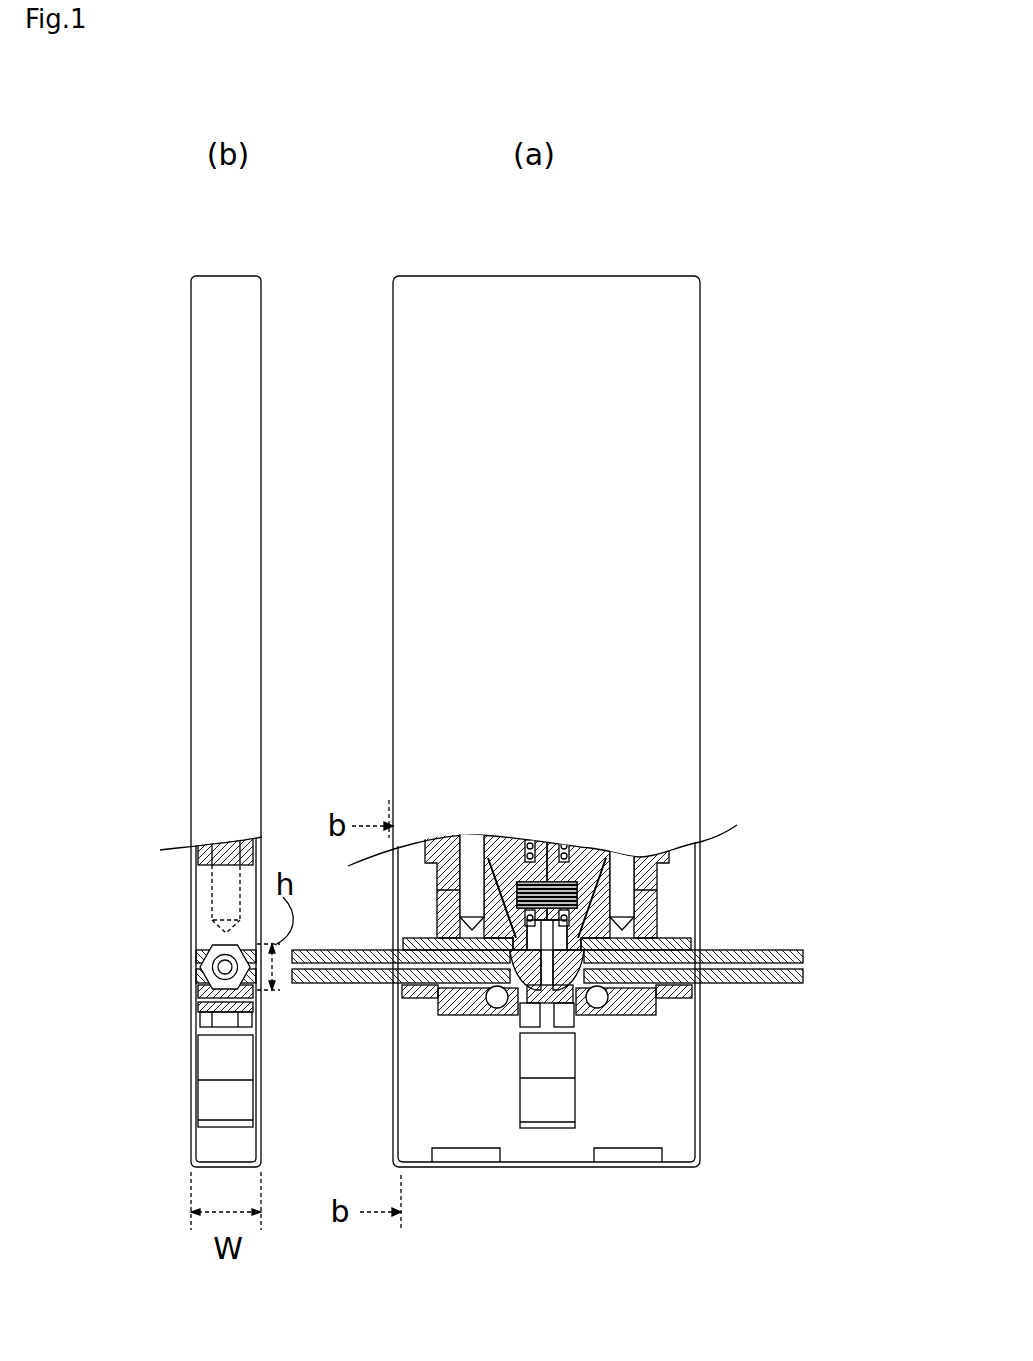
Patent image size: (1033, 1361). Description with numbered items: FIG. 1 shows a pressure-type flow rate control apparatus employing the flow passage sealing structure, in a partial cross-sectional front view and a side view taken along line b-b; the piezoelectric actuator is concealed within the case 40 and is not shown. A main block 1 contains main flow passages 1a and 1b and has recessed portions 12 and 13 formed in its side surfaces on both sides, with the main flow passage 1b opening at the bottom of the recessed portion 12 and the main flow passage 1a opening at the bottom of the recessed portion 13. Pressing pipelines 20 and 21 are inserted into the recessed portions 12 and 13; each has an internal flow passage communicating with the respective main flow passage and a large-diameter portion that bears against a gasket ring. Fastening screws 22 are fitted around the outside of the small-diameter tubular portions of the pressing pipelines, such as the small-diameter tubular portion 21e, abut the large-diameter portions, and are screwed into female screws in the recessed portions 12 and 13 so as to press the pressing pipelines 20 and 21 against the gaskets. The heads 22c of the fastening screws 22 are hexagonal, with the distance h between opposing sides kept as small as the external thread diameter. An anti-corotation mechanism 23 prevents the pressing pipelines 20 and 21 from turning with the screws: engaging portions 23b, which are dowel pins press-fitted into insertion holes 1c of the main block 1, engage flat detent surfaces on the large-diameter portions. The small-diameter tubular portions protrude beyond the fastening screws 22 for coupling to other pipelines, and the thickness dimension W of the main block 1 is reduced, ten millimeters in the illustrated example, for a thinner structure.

The main block 1 is at (191, 897).
The main flow passage 1a is at (520, 1035).
The main flow passage 1b is at (578, 1005).
The insertion hole 1c is at (497, 1009).
The recessed portion 12 is at (655, 932).
The recessed portion 13 is at (437, 920).
The pressing pipeline 20 is at (522, 1008).
The pressing pipeline 21 is at (347, 983).
The small-diameter tubular portion 21e is at (191, 973).
The fastening screw 22 is at (437, 999).
The head 22c is at (191, 945).
The anti-corotation mechanism 23 is at (480, 1003).
The engaging portion 23b is at (191, 1020).
The case 40 is at (702, 1145).